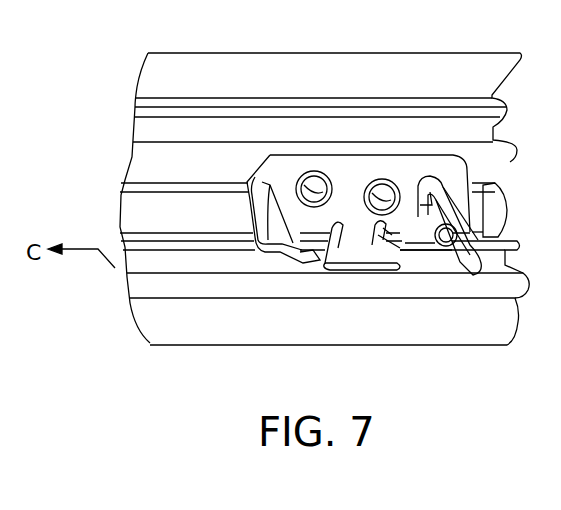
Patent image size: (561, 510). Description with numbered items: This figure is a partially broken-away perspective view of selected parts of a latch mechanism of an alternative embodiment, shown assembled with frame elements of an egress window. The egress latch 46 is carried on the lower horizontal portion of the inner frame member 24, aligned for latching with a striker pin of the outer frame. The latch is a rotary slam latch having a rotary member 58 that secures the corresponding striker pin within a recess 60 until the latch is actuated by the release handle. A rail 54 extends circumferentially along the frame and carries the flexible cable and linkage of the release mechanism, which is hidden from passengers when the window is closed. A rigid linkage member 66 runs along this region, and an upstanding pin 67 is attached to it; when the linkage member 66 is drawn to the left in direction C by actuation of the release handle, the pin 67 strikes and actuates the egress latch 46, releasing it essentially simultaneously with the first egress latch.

The inner frame member 24 is at (488, 328).
The egress latch 46 is at (470, 206).
The rail 54 is at (232, 258).
The rotary member 58 is at (428, 237).
The recess 60 is at (450, 183).
The linkage member 66 is at (158, 263).
The pin 67 is at (302, 263).